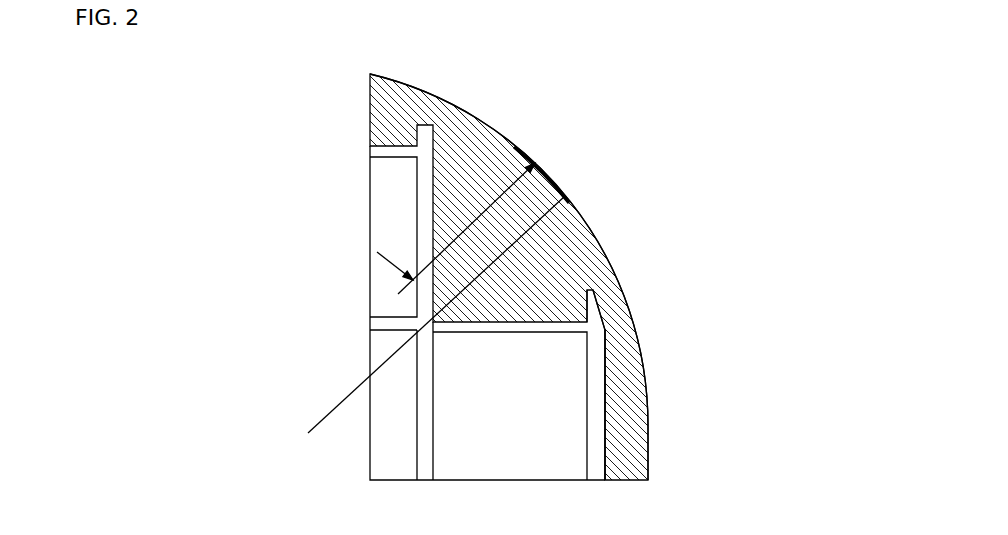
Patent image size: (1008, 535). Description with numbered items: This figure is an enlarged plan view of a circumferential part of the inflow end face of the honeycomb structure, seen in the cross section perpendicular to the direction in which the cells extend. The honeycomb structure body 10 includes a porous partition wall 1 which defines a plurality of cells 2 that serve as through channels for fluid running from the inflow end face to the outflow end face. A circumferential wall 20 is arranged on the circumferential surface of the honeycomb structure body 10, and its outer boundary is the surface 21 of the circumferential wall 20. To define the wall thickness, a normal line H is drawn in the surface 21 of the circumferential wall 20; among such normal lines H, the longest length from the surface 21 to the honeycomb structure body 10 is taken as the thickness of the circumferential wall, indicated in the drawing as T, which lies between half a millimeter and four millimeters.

The porous partition wall 1 is at (425, 210).
The thickness T is at (480, 214).
The surface of the circumferential wall 21 is at (587, 220).
The normal line H is at (520, 242).
The honeycomb structure body 10 is at (606, 327).
The cell 2 is at (537, 417).
The circumferential wall 20 is at (649, 440).